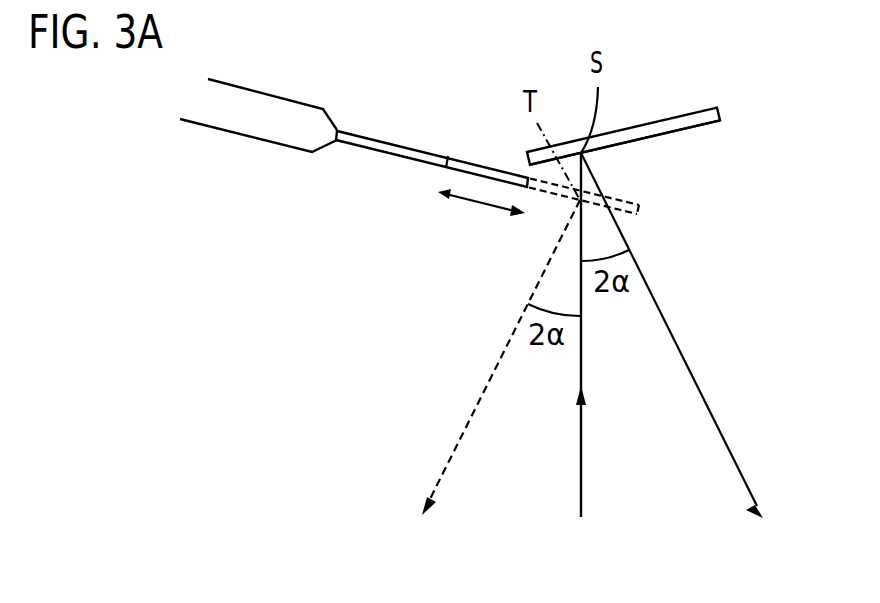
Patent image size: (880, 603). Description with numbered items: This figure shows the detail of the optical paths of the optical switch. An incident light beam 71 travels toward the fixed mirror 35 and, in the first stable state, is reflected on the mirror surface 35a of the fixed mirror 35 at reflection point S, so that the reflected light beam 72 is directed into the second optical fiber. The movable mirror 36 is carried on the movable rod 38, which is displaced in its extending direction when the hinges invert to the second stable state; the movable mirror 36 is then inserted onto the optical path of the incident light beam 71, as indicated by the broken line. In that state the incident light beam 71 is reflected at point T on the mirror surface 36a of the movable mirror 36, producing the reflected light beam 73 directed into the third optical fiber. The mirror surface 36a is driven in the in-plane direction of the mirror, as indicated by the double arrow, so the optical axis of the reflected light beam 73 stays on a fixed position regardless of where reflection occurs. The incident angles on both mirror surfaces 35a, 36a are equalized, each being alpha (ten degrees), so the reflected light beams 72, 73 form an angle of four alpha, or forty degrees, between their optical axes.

The fixed mirror 35 is at (692, 115).
The mirror surface 35a is at (677, 132).
The movable mirror 36 is at (382, 141).
The mirror surface 36a is at (452, 172).
The movable rod 38 is at (270, 142).
The incident light beam 71 is at (583, 460).
The reflected light beam 72 is at (727, 442).
The reflected light beam 73 is at (457, 443).